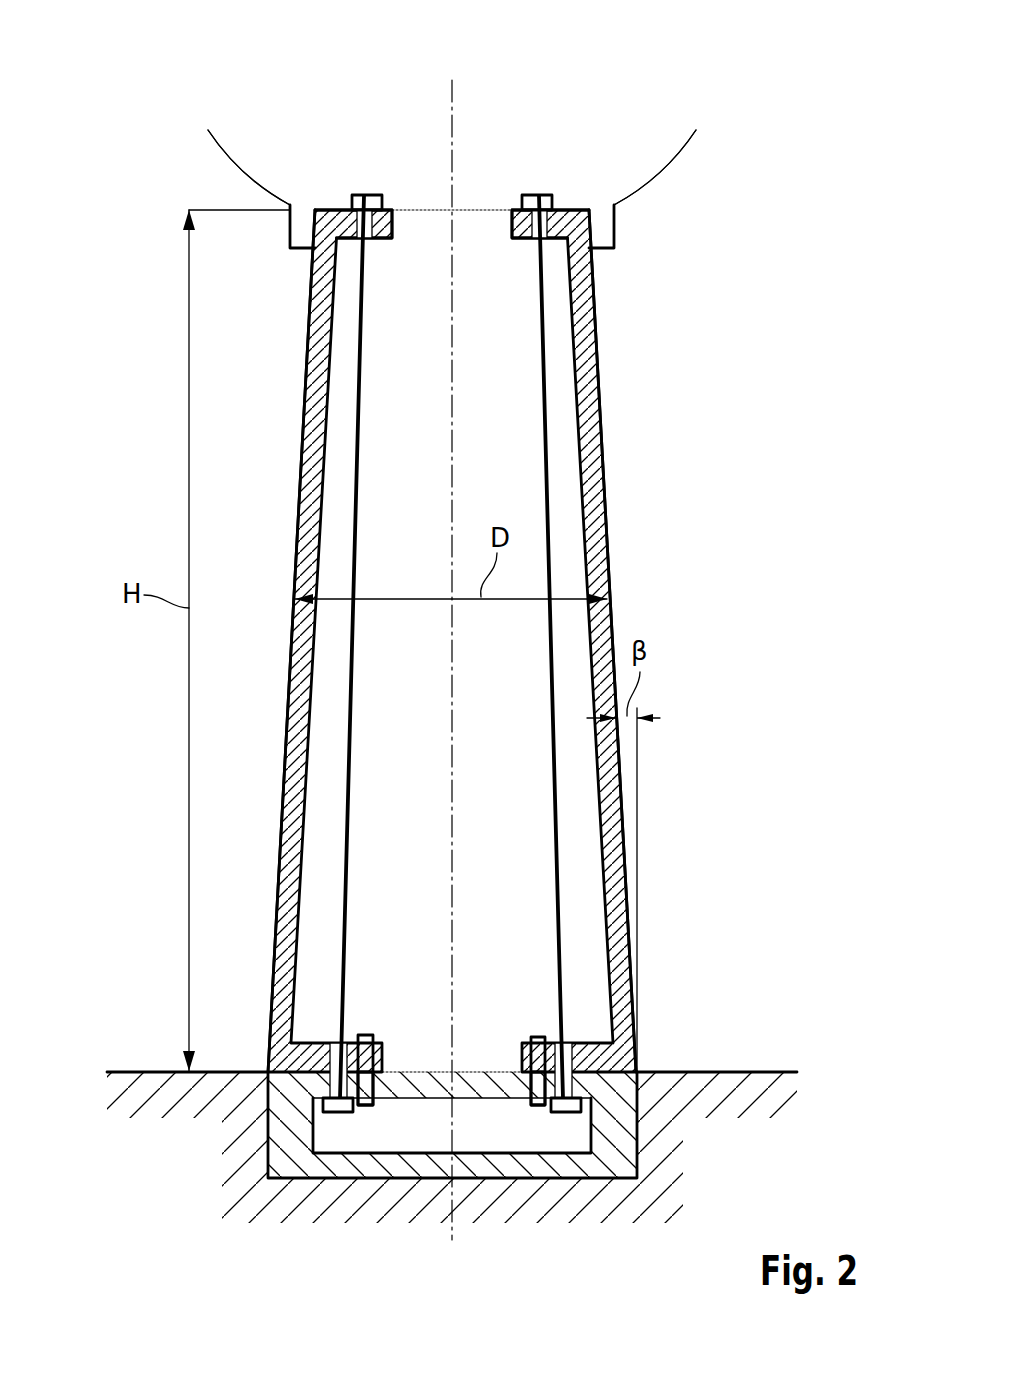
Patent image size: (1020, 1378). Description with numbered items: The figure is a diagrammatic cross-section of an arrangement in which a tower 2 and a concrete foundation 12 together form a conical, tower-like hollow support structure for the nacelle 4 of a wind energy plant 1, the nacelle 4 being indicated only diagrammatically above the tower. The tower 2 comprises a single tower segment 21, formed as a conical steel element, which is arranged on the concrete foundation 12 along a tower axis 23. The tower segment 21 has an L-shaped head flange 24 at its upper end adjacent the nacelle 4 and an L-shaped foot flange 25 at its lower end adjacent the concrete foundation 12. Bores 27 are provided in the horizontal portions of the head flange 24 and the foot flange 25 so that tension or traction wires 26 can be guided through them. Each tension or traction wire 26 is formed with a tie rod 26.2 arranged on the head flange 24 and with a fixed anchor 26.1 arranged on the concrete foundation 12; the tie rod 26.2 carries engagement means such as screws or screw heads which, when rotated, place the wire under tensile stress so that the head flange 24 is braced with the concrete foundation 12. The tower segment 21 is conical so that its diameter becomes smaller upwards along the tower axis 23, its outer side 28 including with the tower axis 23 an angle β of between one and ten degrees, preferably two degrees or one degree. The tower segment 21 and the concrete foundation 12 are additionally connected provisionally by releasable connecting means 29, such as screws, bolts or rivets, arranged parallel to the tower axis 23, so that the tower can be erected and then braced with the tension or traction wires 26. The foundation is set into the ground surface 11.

The wind energy plant 1 is at (669, 84).
The tower 2 is at (369, 641).
The nacelle 4 is at (690, 147).
The ground surface 11 is at (753, 1071).
The concrete foundation 12 is at (482, 1167).
The tower segment 21 is at (595, 485).
The tower axis 23 is at (452, 93).
The head flange 24 is at (520, 240).
The foot flange 25 is at (527, 1040).
The tension or traction wires 26 is at (550, 367).
The fixed anchor 26.1 is at (333, 1113).
The tie rod 26.2 is at (372, 196).
The bores 27 is at (372, 213).
The outer side 28 is at (602, 437).
The releasable connecting means 29 is at (367, 1084).